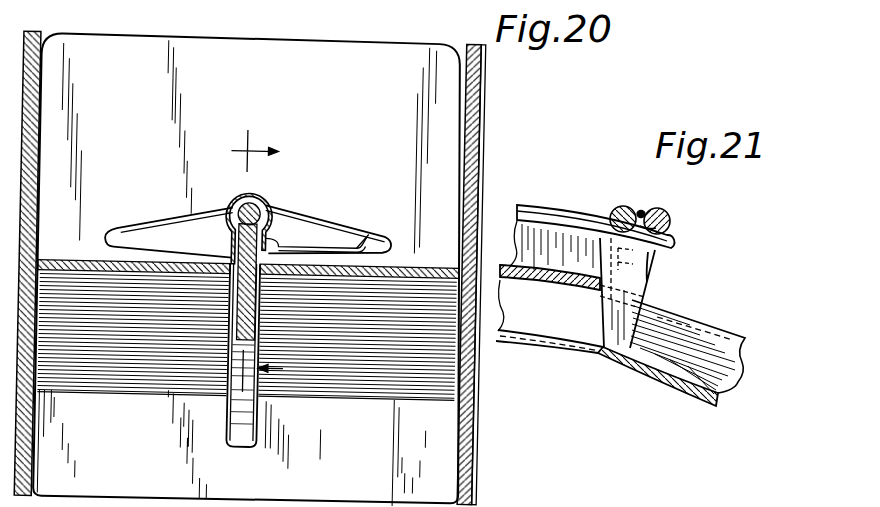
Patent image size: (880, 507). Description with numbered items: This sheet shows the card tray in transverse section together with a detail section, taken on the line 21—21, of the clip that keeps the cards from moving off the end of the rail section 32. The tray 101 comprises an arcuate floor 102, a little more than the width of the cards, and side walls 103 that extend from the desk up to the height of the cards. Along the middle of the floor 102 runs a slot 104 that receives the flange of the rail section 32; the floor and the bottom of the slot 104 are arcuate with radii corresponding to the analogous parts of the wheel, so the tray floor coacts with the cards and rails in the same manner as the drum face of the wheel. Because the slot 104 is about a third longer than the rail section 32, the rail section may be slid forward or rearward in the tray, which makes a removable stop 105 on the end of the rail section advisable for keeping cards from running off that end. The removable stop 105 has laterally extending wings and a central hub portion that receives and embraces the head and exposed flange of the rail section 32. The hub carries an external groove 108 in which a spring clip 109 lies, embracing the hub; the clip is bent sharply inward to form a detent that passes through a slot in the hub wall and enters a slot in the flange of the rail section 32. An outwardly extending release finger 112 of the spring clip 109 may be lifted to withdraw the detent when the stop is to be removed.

In FIG. 20, the section line 21— 21 is at (267, 262).
In FIG. 20, the rail section 32 is at (235, 202).
In FIG. 21, the rail section 32 is at (572, 194).
In FIG. 20, the tray 101 is at (483, 167).
In FIG. 21, the tray 101 is at (660, 376).
In FIG. 20, the arcuate floor 102 is at (397, 260).
In FIG. 21, the arcuate floor 102 is at (583, 283).
In FIG. 20, the side walls 103 is at (24, 137).
In FIG. 20, the slot 104 is at (248, 231).
In FIG. 21, the slot 104 is at (723, 377).
In FIG. 20, the removable stop 105 is at (258, 193).
In FIG. 21, the removable stop 105 is at (612, 208).
In FIG. 21, the external groove 108 is at (642, 212).
In FIG. 20, the spring clip 109 is at (316, 236).
In FIG. 21, the spring clip 109 is at (650, 211).
In FIG. 20, the release finger 112 is at (345, 240).